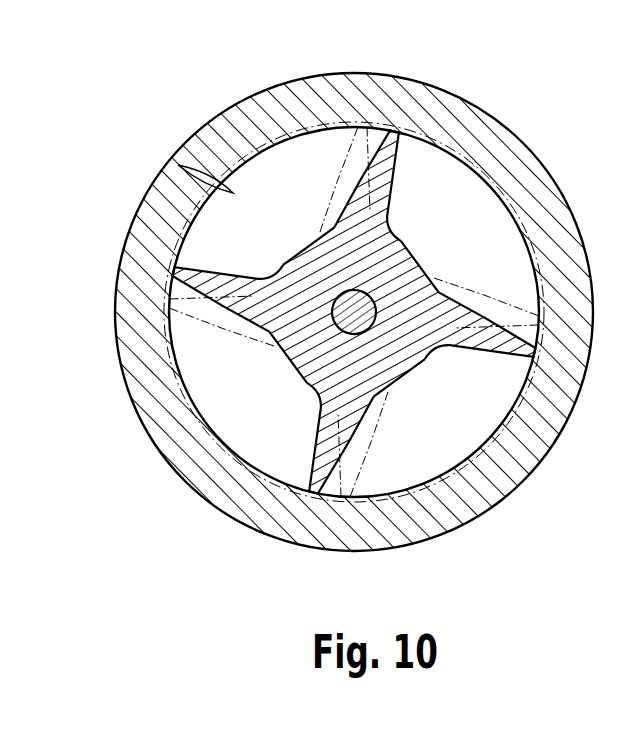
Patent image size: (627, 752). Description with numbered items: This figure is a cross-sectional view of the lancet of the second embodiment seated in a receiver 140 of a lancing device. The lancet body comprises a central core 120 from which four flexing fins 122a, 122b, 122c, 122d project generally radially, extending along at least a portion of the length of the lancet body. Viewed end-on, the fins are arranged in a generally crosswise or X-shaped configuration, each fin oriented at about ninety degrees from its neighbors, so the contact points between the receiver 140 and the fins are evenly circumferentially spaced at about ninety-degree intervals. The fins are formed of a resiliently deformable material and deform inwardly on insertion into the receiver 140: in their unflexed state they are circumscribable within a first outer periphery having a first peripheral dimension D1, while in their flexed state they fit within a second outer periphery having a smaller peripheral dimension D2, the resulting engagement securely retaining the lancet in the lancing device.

The central core 120 is at (297, 355).
The flexing fin 122a is at (393, 138).
The flexing fin 122b is at (565, 417).
The flexing fin 122c is at (325, 475).
The flexing fin 122d is at (180, 270).
The receiver 140 is at (487, 487).
The first peripheral dimension D1 is at (290, 83).
The second peripheral dimension D2 is at (184, 170).